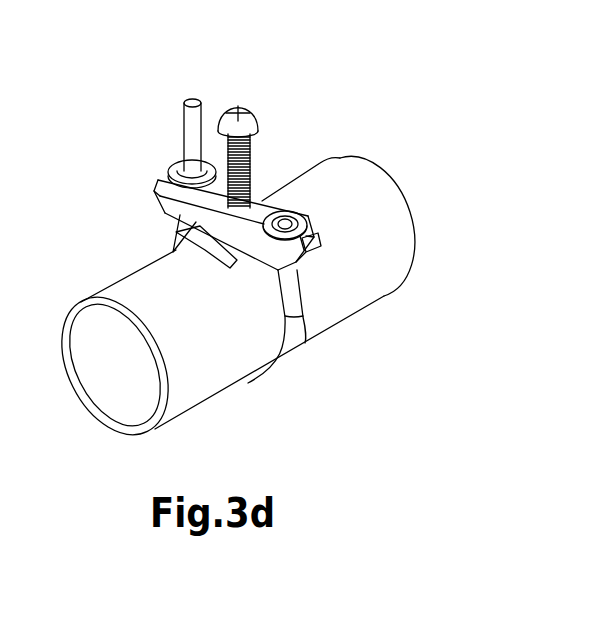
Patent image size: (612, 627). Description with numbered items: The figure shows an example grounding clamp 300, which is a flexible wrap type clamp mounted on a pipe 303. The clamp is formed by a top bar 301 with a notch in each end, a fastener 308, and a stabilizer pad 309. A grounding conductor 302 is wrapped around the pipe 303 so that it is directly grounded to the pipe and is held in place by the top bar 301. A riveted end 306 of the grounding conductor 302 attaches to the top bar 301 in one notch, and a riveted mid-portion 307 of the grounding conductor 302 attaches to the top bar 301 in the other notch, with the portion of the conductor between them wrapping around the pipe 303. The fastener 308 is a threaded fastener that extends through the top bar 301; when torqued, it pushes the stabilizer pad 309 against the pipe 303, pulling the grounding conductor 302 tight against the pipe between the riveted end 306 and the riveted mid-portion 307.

The grounding clamp 300 is at (264, 244).
The top bar 301 is at (260, 208).
The grounding conductor 302 is at (286, 360).
The pipe 303 is at (347, 297).
The riveted end 306 is at (308, 218).
The riveted mid-portion 307 is at (168, 169).
The fastener 308 is at (248, 114).
The stabilizer pad 309 is at (172, 252).